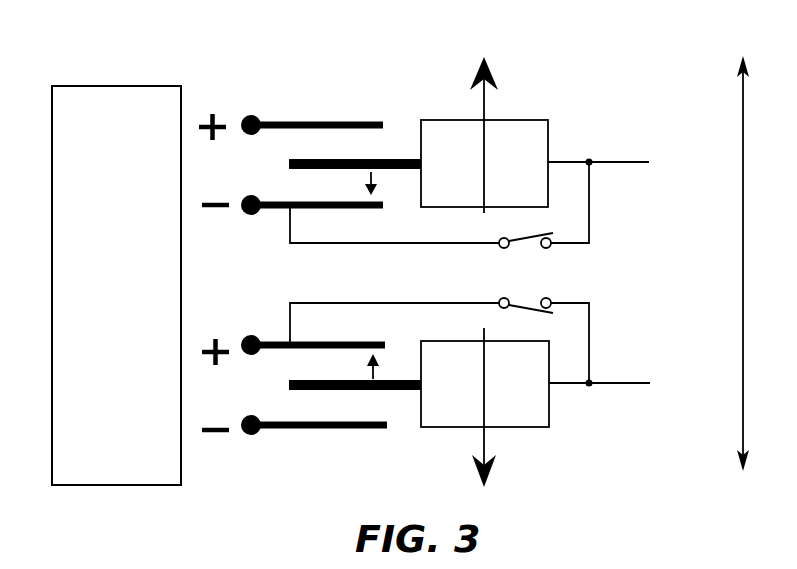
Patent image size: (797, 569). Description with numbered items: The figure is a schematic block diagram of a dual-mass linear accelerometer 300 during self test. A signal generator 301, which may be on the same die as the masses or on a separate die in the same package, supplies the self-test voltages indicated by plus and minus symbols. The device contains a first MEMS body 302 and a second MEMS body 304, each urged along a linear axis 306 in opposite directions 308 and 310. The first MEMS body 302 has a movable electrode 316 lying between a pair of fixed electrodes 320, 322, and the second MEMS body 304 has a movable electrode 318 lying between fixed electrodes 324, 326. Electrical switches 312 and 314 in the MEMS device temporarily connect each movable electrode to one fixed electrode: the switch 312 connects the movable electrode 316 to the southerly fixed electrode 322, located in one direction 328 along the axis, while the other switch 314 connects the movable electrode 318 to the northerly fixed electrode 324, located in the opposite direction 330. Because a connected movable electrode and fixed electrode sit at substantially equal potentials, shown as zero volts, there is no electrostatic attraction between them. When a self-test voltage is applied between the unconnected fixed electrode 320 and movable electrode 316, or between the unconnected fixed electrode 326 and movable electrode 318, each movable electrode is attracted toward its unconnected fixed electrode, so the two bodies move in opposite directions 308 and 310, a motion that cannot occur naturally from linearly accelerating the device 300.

The dual-mass linear accelerometer 300 is at (286, 63).
The signal generator 301 is at (133, 346).
The first MEMS body 302 is at (548, 130).
The second MEMS body 304 is at (549, 415).
The linear axis 306 is at (743, 91).
The direction of first MEMS body movement 308 is at (485, 98).
The direction of second MEMS body movement 310 is at (486, 445).
The first electrical switch 312 is at (522, 241).
The second electrical switch 314 is at (530, 304).
The first movable electrode 316 is at (390, 159).
The second movable electrode 318 is at (400, 391).
The unconnected fixed electrode of first pair 320 is at (333, 121).
The southerly fixed electrode of first pair 322 is at (278, 208).
The northerly fixed electrode of second pair 324 is at (278, 340).
The unconnected fixed electrode of second pair 326 is at (337, 431).
The direction from first movable electrode to its connected fixed electrode 328 is at (376, 176).
The direction from second movable electrode to its connected fixed electrode 330 is at (378, 368).